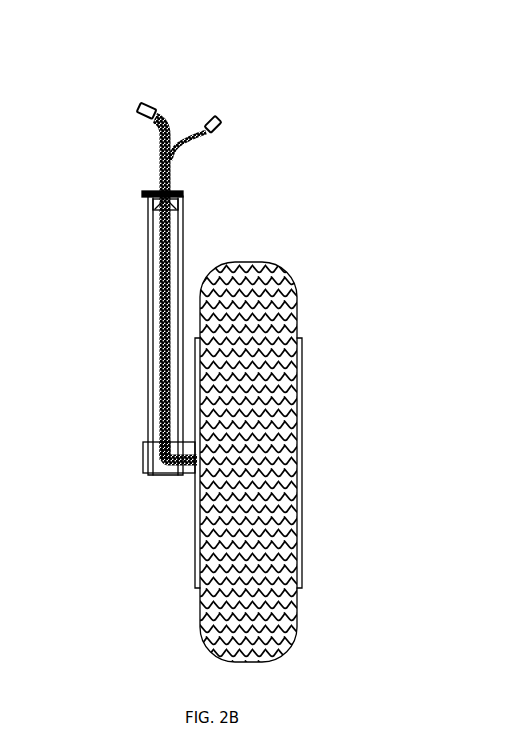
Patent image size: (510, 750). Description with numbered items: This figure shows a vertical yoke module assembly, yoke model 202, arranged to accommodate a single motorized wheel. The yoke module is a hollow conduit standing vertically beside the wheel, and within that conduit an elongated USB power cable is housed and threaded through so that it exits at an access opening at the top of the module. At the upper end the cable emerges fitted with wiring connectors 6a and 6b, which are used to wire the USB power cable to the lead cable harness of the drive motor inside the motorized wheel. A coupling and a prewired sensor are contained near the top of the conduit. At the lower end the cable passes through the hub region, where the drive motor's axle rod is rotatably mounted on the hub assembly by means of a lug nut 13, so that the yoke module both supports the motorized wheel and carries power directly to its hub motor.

The yoke model 202 is at (140, 55).
The wiring connector 6a is at (139, 113).
The wiring connector 6b is at (223, 129).
The lug nut 13 is at (143, 463).